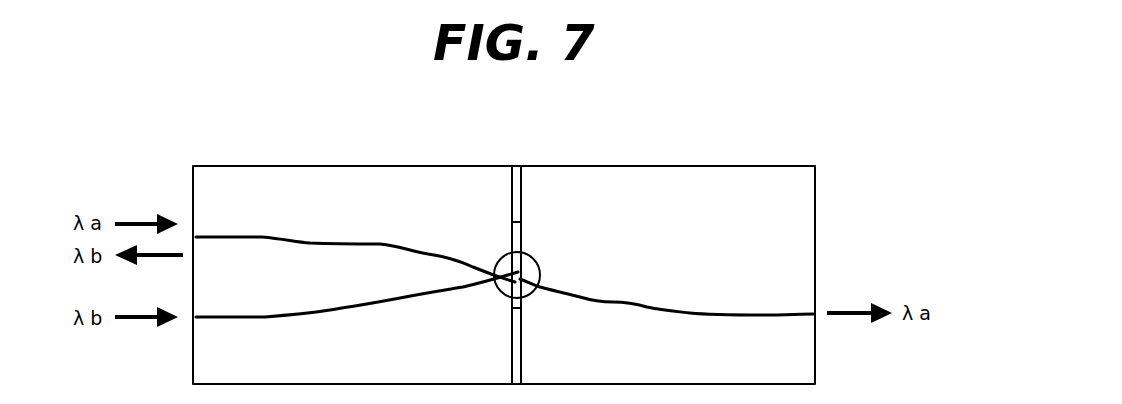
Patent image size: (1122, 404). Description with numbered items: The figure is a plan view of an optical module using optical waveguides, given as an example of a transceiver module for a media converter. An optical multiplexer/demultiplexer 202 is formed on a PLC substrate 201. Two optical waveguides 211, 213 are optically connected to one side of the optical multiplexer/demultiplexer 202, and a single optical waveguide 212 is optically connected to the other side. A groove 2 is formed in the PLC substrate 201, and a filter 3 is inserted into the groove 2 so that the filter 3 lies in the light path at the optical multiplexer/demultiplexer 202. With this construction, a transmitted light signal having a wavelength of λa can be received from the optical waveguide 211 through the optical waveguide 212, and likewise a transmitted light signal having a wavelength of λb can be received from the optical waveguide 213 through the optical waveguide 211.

The groove 2 is at (517, 197).
The filter 3 is at (516, 239).
The PLC substrate 201 is at (740, 164).
The optical multiplexer/demultiplexer 202 is at (539, 265).
The optical waveguide 211 is at (261, 238).
The optical waveguide 212 is at (673, 308).
The optical waveguide 213 is at (269, 318).